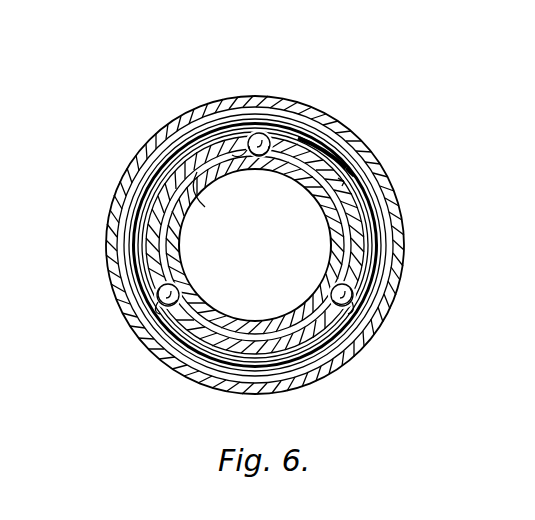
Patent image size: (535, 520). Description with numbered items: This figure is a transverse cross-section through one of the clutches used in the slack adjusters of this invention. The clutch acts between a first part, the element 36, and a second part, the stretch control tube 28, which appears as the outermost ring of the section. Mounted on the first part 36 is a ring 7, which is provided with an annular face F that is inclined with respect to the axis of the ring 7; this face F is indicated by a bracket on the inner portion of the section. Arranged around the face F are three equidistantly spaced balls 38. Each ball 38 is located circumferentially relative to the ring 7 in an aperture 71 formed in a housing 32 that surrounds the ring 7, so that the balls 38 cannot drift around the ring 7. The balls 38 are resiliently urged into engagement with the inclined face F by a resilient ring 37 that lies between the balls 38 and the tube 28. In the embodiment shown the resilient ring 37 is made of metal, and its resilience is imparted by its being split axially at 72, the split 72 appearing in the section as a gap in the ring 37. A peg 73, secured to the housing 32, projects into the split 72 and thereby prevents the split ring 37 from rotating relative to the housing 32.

The ring 7 is at (313, 323).
The stretch control tube 28 is at (340, 130).
The housing 32 is at (322, 335).
The first part 36 is at (338, 228).
The resilient ring 37 is at (345, 163).
The balls 38 is at (258, 133).
The aperture 71 is at (268, 138).
The split 72 is at (356, 173).
The peg 73 is at (342, 180).
The annular face F is at (205, 198).